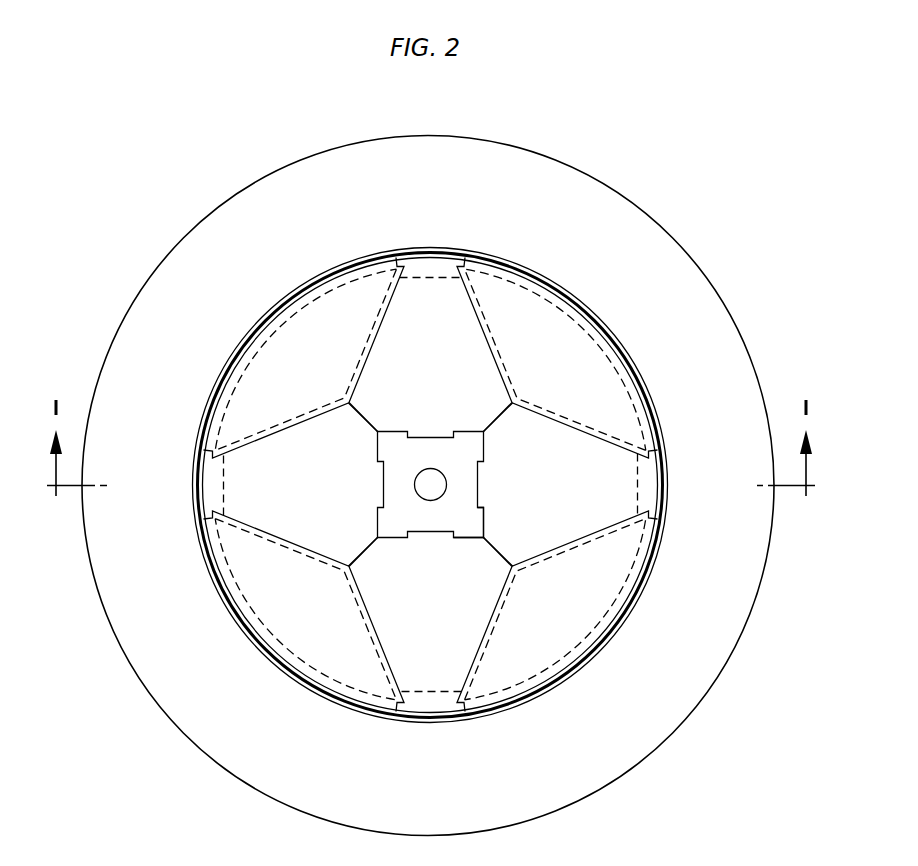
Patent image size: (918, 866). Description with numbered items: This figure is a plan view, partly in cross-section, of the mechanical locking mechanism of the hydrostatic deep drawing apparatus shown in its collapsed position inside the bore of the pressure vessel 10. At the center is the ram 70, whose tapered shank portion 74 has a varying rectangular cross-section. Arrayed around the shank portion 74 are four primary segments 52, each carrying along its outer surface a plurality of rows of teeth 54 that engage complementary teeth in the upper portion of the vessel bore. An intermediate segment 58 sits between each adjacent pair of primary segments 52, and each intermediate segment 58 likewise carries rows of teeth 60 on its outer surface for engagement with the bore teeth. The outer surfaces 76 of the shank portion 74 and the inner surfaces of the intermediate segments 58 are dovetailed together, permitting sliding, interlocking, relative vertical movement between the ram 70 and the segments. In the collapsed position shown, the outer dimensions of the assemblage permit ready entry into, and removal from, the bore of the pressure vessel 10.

The pressure vessel 10 is at (636, 717).
The primary segments 52 is at (558, 616).
The rows of teeth 54 is at (544, 289).
The intermediate segment 58 is at (443, 630).
The rows of teeth 60 is at (438, 279).
The ram 70 is at (490, 445).
The tapered shank portion 74 is at (468, 486).
The outer surfaces 76 is at (487, 521).